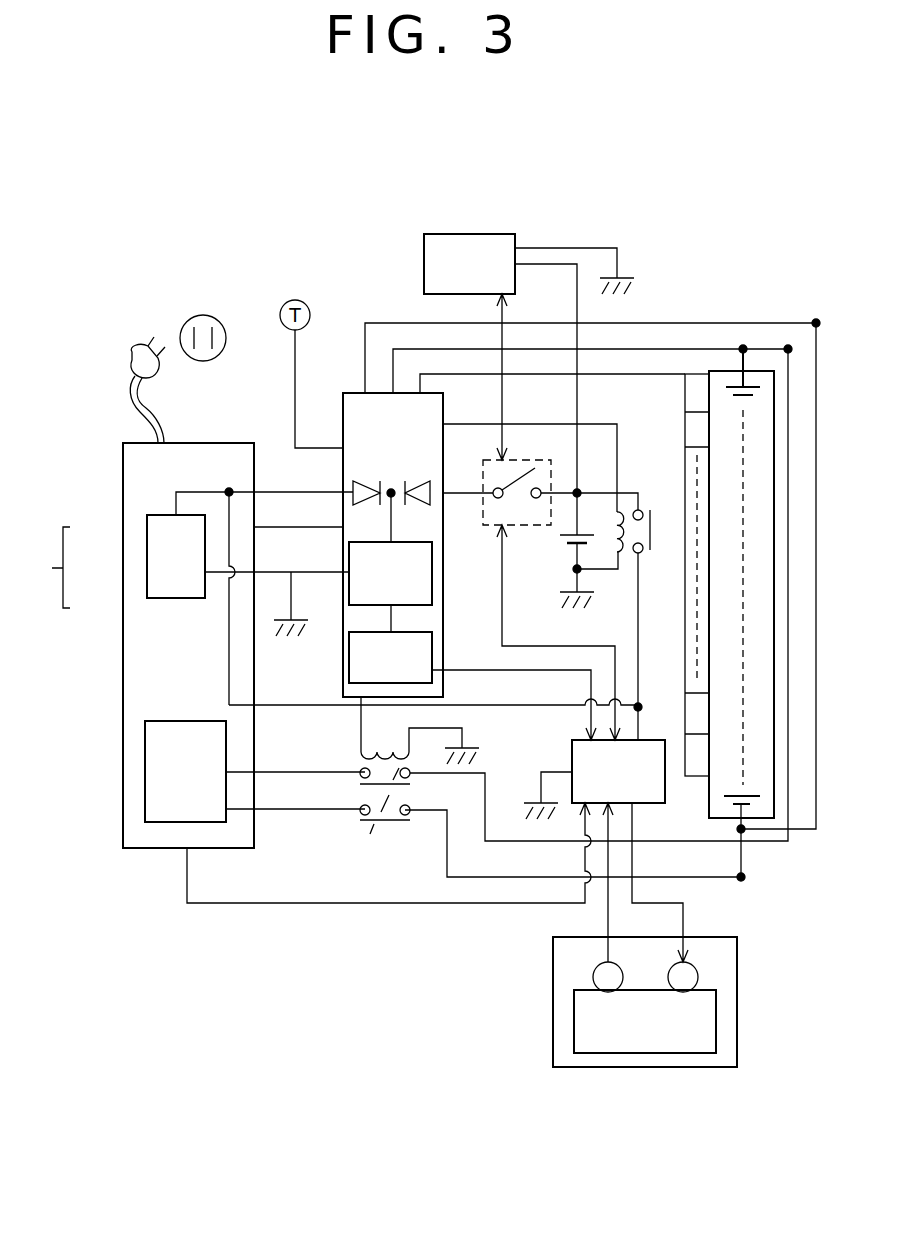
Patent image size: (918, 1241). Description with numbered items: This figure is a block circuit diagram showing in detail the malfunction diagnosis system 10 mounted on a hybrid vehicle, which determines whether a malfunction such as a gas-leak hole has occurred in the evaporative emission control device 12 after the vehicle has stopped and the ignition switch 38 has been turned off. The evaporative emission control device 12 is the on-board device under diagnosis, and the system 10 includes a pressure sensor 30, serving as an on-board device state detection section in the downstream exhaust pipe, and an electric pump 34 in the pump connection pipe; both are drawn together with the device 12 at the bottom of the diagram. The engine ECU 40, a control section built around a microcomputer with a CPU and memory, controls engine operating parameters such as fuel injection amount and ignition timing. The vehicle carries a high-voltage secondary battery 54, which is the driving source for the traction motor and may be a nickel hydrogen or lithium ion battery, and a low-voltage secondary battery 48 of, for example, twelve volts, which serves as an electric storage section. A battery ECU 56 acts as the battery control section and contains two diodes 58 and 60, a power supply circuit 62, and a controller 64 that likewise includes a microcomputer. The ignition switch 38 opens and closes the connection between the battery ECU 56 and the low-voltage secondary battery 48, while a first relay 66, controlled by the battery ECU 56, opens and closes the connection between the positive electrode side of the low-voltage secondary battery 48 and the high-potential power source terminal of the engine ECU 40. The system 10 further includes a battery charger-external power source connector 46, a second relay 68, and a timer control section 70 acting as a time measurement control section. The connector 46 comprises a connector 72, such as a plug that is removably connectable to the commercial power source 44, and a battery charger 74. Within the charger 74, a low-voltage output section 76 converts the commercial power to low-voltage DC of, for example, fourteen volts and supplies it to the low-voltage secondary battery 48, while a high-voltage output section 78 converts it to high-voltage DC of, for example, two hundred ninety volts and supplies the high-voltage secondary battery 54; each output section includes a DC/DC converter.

The malfunction diagnosis system 10 is at (684, 208).
The evaporative emission control device 12 is at (716, 1002).
The pressure sensor 30 is at (593, 977).
The electric pump 34 is at (698, 975).
The ignition switch 38 is at (537, 460).
The engine ECU 40 is at (572, 755).
The commercial power source 44 is at (208, 315).
The battery charger-external power source connector 46 is at (41, 567).
The low-voltage secondary battery 48 is at (563, 543).
The high-voltage secondary battery 54 is at (722, 371).
The battery ECU 56 is at (342, 420).
The diode 58 is at (418, 478).
The diode 60 is at (363, 480).
The power supply circuit 62 is at (443, 577).
The controller 64 is at (433, 647).
The first relay 66 is at (653, 530).
The second relay 68 is at (367, 825).
The timer control section 70 is at (470, 234).
The connector 72 is at (130, 356).
The battery charger 74 is at (123, 660).
The low-voltage output section 76 is at (172, 598).
The high-voltage output section 78 is at (163, 823).